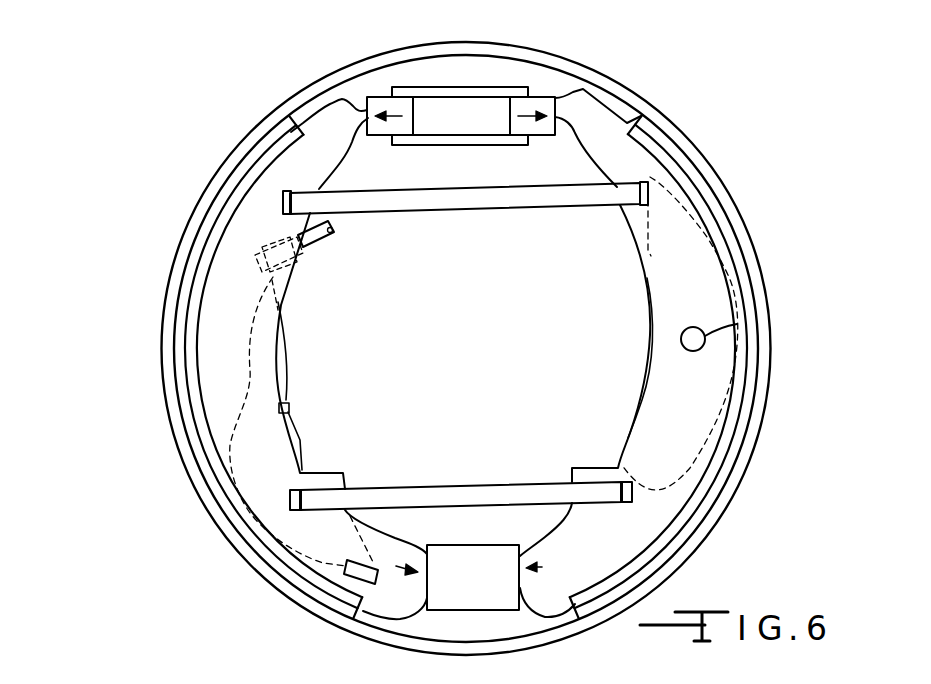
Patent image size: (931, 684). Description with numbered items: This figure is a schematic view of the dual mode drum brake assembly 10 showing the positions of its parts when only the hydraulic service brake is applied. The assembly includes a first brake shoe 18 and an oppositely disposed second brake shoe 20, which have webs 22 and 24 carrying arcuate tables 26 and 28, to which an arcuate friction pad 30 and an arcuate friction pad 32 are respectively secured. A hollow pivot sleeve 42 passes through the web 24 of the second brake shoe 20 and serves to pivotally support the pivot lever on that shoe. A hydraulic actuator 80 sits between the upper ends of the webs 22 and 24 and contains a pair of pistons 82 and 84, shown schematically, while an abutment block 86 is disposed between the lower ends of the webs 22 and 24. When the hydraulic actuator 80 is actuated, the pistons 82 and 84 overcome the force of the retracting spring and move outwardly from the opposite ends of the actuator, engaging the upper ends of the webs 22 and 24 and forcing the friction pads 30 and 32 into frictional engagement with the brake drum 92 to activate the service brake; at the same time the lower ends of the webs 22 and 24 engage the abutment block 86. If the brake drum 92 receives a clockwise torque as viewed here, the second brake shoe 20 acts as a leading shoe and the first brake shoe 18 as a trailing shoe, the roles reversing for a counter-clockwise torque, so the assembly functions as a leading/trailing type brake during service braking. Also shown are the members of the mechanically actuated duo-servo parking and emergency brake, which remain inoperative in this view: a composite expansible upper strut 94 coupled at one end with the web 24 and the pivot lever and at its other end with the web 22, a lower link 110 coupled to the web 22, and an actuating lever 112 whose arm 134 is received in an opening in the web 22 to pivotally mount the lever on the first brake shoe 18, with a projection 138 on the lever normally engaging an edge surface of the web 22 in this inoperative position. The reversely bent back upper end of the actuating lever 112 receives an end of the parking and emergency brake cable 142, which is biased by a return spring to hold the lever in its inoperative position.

The dual mode drum brake assembly 10 is at (457, 58).
The first brake shoe 18 is at (180, 352).
The second brake shoe 20 is at (748, 243).
The web 22 is at (322, 180).
The web 24 is at (615, 553).
The arcuate table 26 is at (214, 222).
The arcuate table 28 is at (712, 195).
The arcuate friction pad 30 is at (297, 92).
The arcuate friction pad 32 is at (631, 92).
The hollow pivot sleeve 42 is at (737, 324).
The hydraulic actuator 80 is at (480, 133).
The piston 82 is at (379, 96).
The piston 84 is at (542, 96).
The abutment block 86 is at (494, 598).
The brake drum 92 is at (688, 132).
The composite expansible upper strut 94 is at (428, 215).
The lower link 110 is at (428, 487).
The actuating lever 112 is at (285, 360).
The arm 134 is at (356, 578).
The projection 138 is at (289, 407).
The parking and emergency brake cable 142 is at (322, 243).